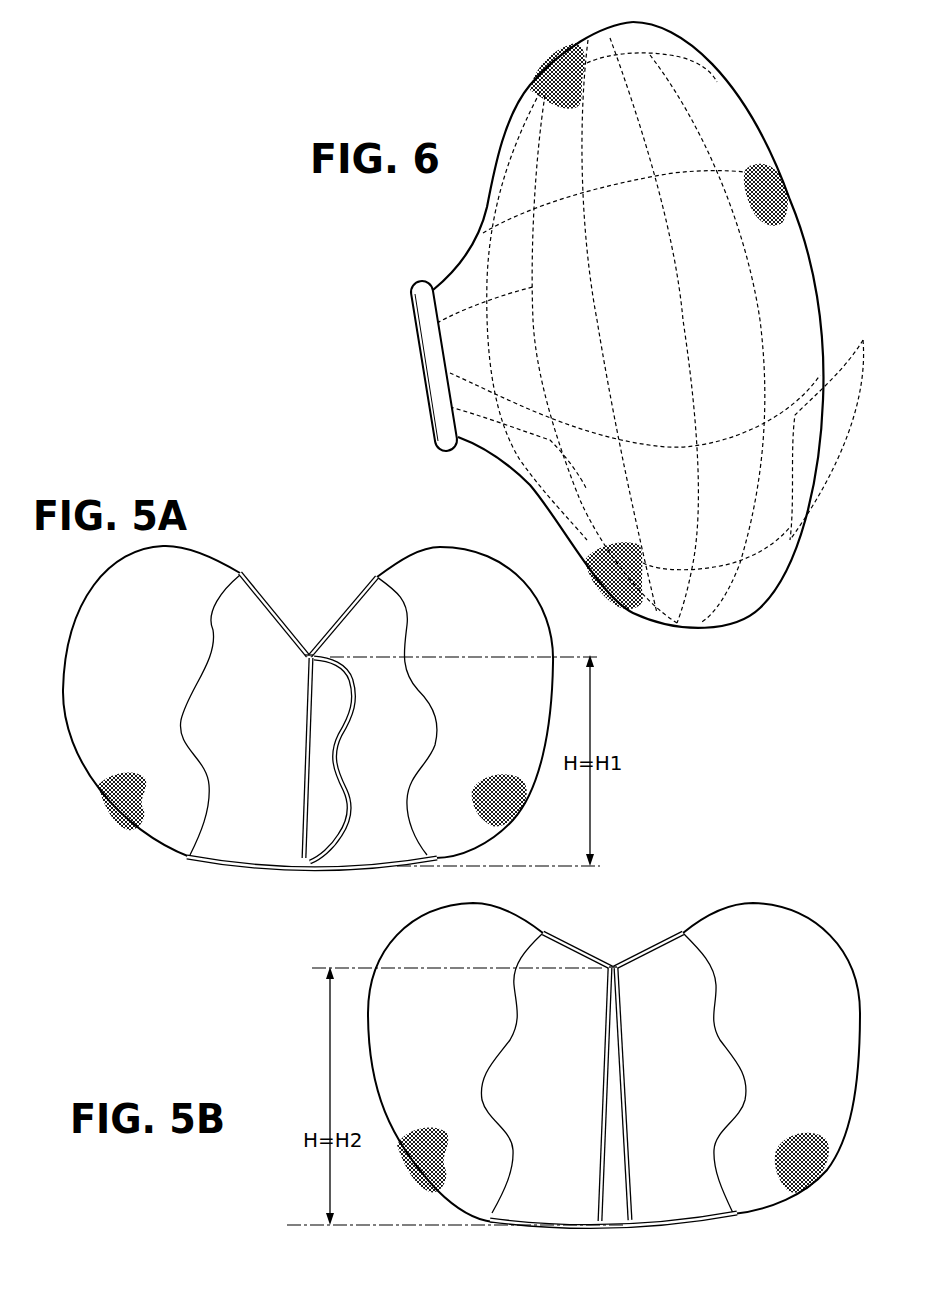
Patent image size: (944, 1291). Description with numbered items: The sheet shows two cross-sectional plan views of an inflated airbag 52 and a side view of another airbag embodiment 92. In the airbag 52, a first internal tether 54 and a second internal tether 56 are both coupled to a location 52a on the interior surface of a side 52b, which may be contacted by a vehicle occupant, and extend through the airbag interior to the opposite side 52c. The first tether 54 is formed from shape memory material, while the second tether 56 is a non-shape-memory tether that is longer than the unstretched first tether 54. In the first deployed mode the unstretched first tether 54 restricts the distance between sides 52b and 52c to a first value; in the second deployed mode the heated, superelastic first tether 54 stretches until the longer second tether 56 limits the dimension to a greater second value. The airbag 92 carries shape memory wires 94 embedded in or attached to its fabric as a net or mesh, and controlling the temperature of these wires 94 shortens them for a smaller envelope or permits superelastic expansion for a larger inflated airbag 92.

In FIG. 5A, the airbag 52 is at (76, 607).
In FIG. 5B, the airbag 52 is at (614, 1062).
In FIG. 5A, the location 52a is at (308, 648).
In FIG. 5B, the location 52a is at (613, 963).
In FIG. 5A, the side of the airbag 52b is at (368, 582).
In FIG. 5B, the side of the airbag 52b is at (640, 947).
In FIG. 5A, the side of the airbag 52c is at (323, 867).
In FIG. 5B, the side of the airbag 52c is at (638, 1227).
In FIG. 5A, the first internal tether 54 is at (297, 750).
In FIG. 5B, the first internal tether 54 is at (602, 1110).
In FIG. 5A, the second internal tether 56 is at (350, 725).
In FIG. 5B, the second internal tether 56 is at (627, 1027).
In FIG. 6, the airbag 92 is at (756, 119).
In FIG. 6, the wires 94 is at (832, 428).